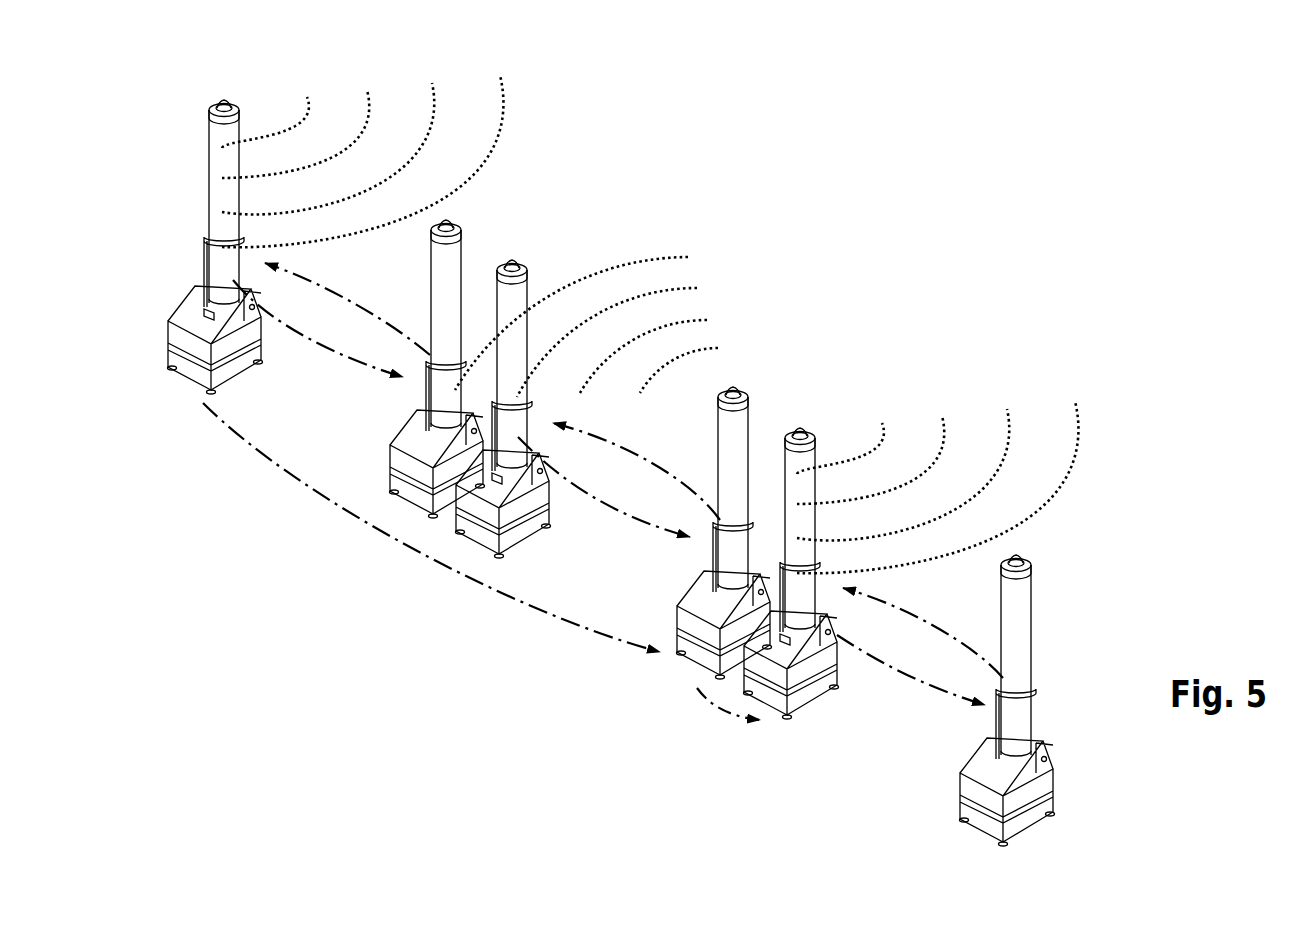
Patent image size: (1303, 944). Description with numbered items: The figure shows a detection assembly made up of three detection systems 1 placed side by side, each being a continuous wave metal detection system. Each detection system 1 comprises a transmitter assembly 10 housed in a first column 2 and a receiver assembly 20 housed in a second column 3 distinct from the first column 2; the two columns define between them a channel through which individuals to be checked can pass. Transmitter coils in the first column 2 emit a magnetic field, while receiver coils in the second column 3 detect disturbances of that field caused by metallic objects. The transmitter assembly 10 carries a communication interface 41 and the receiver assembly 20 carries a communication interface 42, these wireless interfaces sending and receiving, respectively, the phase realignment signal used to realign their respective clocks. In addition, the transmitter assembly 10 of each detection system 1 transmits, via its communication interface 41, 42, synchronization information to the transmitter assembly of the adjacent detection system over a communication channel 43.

The detection system 1 is at (520, 126).
The first column 2 is at (212, 186).
The second column 3 is at (434, 284).
The transmitter assembly 10 is at (237, 99).
The receiver assembly 20 is at (460, 216).
The communication interface 41 is at (214, 265).
The communication interface 42 is at (437, 396).
The communication channel 43 is at (413, 557).